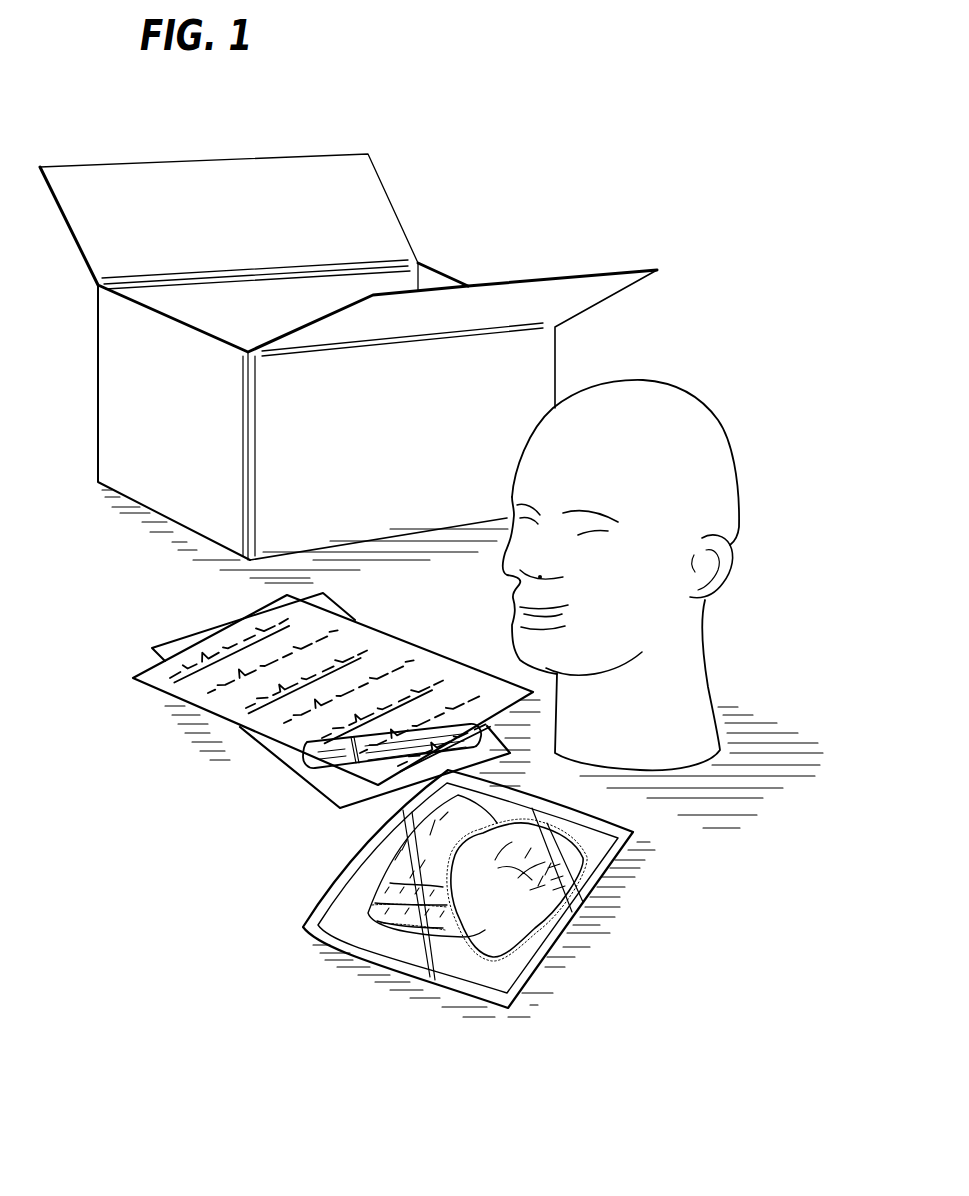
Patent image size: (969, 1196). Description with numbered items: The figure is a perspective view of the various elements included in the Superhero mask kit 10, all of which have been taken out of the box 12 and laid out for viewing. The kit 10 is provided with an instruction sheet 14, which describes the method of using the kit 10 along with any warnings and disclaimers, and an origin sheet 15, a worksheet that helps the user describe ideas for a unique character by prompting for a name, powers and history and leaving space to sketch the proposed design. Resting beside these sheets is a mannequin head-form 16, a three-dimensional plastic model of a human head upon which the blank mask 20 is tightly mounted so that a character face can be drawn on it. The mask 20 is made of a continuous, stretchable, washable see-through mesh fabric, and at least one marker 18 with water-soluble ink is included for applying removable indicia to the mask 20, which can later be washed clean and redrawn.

The mask kit 10 is at (678, 171).
The box 12 is at (165, 485).
The instruction sheet 14 is at (153, 690).
The origin sheet 15 is at (310, 787).
The mannequin head-form 16 is at (732, 448).
The marker 18 is at (300, 761).
The mask 20 is at (530, 930).